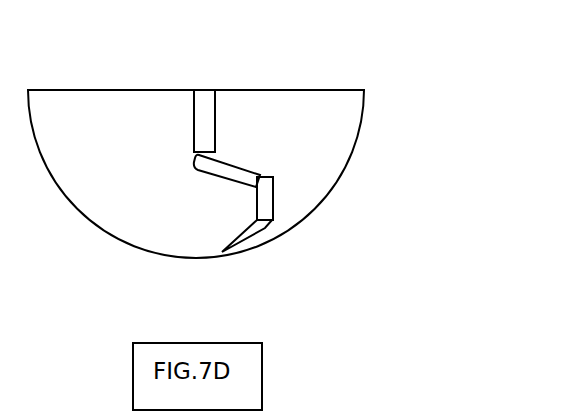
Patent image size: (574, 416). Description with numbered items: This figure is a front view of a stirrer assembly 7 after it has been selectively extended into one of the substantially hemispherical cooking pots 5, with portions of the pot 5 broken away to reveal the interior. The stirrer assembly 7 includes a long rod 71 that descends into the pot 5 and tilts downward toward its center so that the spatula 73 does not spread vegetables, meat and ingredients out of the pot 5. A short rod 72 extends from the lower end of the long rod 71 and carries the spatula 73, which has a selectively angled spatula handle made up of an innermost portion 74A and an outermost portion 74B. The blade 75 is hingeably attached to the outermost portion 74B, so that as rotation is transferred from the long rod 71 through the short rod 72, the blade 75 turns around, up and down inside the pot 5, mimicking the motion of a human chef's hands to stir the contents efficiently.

The pot 5 is at (323, 152).
The stirrer assembly 7 is at (212, 82).
The long rod 71 is at (194, 110).
The short rod 72 is at (195, 163).
The spatula 73 is at (272, 170).
The innermost portion 74A is at (218, 173).
The outermost portion 74B is at (256, 194).
The blade 75 is at (258, 232).